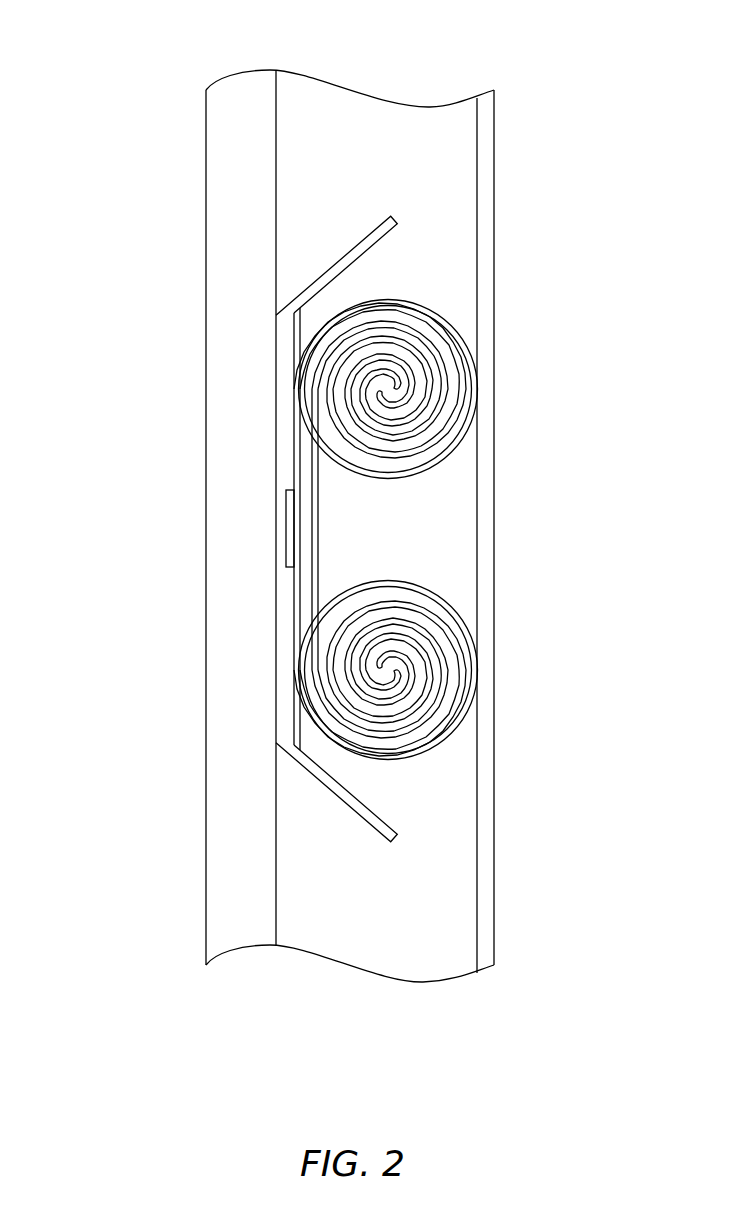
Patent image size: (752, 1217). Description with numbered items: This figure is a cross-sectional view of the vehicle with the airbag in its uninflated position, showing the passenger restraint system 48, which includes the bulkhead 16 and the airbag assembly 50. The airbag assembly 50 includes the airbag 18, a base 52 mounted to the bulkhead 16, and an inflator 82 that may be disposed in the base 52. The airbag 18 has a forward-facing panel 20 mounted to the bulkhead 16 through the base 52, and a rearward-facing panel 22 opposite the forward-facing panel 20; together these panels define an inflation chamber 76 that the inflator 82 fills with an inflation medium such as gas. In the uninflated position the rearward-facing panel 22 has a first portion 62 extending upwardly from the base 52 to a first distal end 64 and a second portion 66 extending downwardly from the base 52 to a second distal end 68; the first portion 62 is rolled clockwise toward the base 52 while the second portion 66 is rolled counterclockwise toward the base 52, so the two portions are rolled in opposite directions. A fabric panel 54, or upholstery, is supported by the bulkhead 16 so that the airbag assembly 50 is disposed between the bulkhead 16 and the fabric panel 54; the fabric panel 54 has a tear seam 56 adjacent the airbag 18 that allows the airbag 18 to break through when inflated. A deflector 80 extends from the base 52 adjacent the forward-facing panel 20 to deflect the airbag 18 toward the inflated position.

The passenger restraint system 48 is at (308, 515).
The bulkhead 16 is at (207, 831).
The airbag 18 is at (427, 355).
The forward-facing panel 20 is at (312, 332).
The rearward-facing panel 22 is at (318, 527).
The airbag assembly 50 is at (428, 148).
The base 52 is at (427, 693).
The fabric panel 54 is at (497, 200).
The tear seam 56 is at (485, 530).
The first portion 62 is at (446, 311).
The first distal end 64 is at (405, 402).
The second portion 66 is at (441, 736).
The second distal end 68 is at (407, 650).
The inflation chamber 76 is at (386, 400).
The deflector 80 is at (367, 240).
The inflator 82 is at (292, 574).